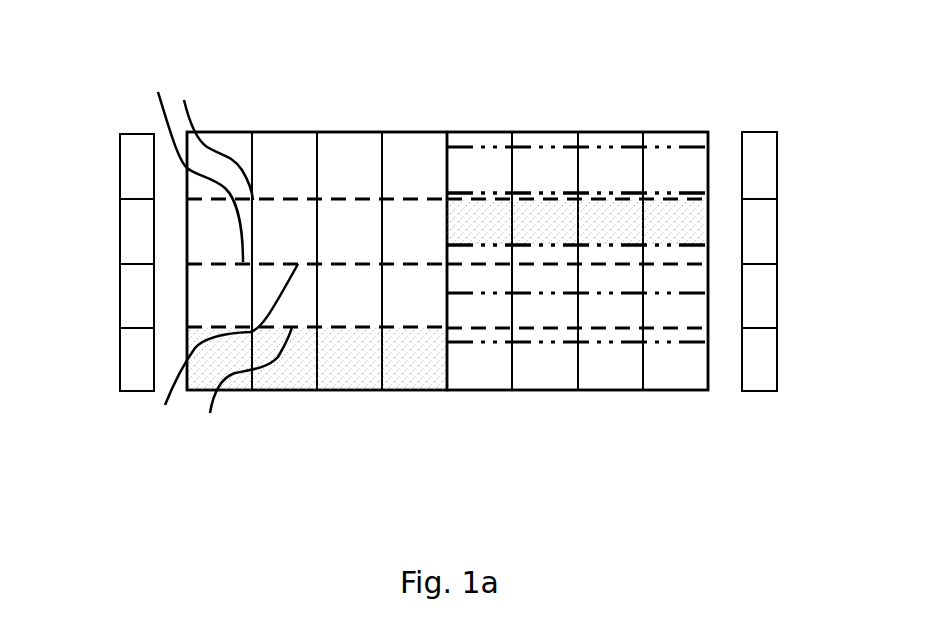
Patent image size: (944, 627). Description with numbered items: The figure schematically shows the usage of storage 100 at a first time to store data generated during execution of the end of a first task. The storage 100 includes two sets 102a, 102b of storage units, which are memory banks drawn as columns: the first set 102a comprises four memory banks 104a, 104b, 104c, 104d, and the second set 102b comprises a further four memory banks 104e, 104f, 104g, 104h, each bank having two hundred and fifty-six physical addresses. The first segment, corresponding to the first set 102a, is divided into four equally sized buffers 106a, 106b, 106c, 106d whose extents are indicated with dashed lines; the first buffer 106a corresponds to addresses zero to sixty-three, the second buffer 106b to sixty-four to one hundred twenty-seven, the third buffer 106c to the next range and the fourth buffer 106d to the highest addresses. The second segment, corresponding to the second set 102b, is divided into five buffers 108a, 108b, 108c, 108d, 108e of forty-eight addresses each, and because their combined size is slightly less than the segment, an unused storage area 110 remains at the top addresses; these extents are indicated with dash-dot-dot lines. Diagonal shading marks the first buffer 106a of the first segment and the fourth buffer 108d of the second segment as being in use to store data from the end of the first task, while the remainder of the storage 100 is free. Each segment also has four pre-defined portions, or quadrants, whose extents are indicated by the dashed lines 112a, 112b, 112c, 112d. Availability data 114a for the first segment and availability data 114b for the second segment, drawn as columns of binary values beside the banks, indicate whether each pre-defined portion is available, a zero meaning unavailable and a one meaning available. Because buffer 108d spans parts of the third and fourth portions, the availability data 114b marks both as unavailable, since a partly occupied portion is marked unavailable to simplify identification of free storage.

The storage 100 is at (297, 46).
The first set of storage units 102a is at (447, 447).
The second set of storage units 102b is at (708, 447).
The memory bank 104a is at (246, 130).
The memory bank 104b is at (281, 395).
The memory bank 104c is at (354, 130).
The memory bank 104d is at (412, 395).
The memory bank 104e is at (478, 130).
The memory bank 104f is at (546, 395).
The memory bank 104g is at (613, 130).
The memory bank 104h is at (678, 395).
The first buffer of the first segment 106a is at (295, 374).
The second buffer of the first segment 106b is at (295, 305).
The third buffer of the first segment 106c is at (295, 250).
The fourth buffer of the first segment 106d is at (295, 188).
The first buffer of the second segment 108a is at (558, 381).
The second buffer of the second segment 108b is at (558, 333).
The third buffer of the second segment 108c is at (558, 287).
The fourth buffer of the second segment 108d is at (558, 233).
The fifth buffer of the second segment 108e is at (558, 184).
The unused storage area 110 is at (707, 131).
The dashed line 112a is at (242, 387).
The dashed line 112b is at (201, 350).
The dashed line 112c is at (174, 158).
The dashed line 112d is at (216, 136).
The availability data for the first segment 114a is at (121, 133).
The availability data for the second segment 114b is at (776, 131).